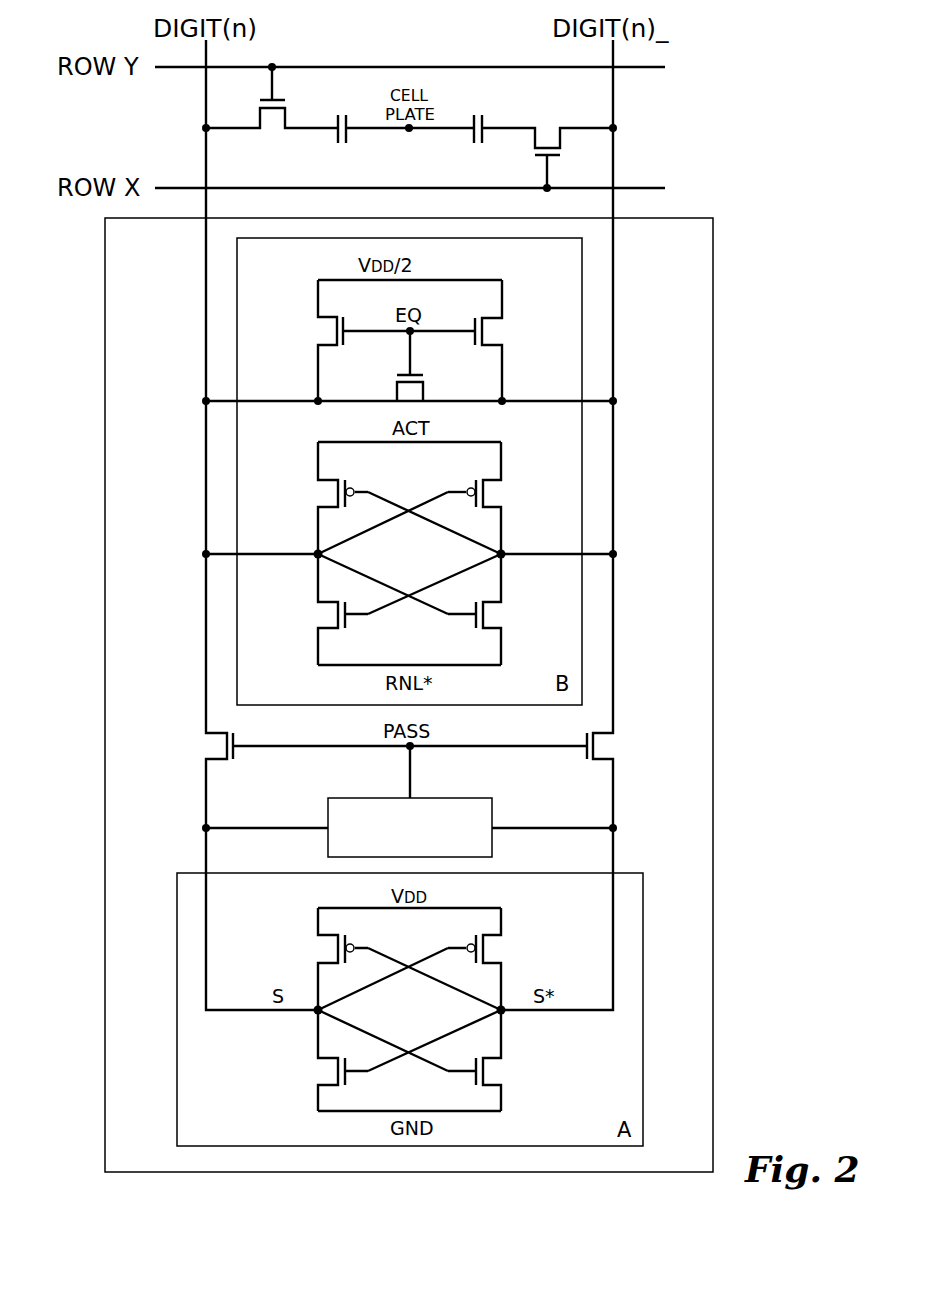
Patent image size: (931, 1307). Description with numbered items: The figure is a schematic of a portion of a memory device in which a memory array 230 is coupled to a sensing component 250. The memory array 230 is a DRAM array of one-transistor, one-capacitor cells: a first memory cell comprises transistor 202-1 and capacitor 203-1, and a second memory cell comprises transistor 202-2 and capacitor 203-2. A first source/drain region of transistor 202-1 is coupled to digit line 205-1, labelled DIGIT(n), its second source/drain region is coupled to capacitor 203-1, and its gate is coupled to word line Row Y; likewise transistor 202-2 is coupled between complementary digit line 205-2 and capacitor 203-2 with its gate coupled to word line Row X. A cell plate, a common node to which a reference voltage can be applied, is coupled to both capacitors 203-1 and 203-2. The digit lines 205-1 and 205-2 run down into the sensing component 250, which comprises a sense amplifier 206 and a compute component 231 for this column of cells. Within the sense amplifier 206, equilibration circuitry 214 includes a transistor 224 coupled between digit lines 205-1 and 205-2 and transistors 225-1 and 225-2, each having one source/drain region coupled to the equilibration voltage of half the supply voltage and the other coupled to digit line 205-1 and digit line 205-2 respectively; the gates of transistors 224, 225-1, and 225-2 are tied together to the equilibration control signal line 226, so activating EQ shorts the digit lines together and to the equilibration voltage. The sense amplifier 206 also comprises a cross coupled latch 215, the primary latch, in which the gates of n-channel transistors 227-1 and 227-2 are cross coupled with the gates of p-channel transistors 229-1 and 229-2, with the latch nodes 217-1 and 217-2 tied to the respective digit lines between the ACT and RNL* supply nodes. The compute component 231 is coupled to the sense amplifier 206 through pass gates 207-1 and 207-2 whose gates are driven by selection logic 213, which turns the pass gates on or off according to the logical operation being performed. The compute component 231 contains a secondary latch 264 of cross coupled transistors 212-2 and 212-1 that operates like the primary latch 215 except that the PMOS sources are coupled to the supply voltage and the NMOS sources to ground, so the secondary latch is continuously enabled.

The memory array 230 is at (120, 133).
The transistor 202-1 is at (286, 117).
The transistor 202-2 is at (535, 138).
The capacitor 203-1 is at (338, 143).
The capacitor 203-2 is at (476, 115).
The digit line 205-1 is at (206, 257).
The digit line 205-2 is at (613, 257).
The sense amplifier 206 is at (237, 305).
The sensing component 250 is at (105, 350).
The transistor 225-1 is at (330, 332).
The transistor 225-2 is at (492, 332).
The equilibration control signal line 226 is at (440, 330).
The transistor 224 is at (422, 391).
The equilibration circuitry 214 is at (313, 422).
The cross coupled latch 215 is at (313, 683).
The p-channel transistor 229-1 is at (323, 492).
The p-channel transistor 229-2 is at (497, 492).
The n-channel transistor 227-1 is at (323, 614).
The n-channel transistor 227-2 is at (497, 614).
The sense amplifier node 217-1 is at (318, 554).
The sense amplifier node 217-2 is at (501, 554).
The pass gate 207-1 is at (210, 745).
The pass gate 207-2 is at (610, 745).
The selection logic 213 is at (360, 797).
The compute component 231 is at (177, 946).
The secondary latch 264 is at (356, 1009).
The NMOS transistor 212-1 is at (378, 1110).
The PMOS transistor 212-2 is at (440, 908).